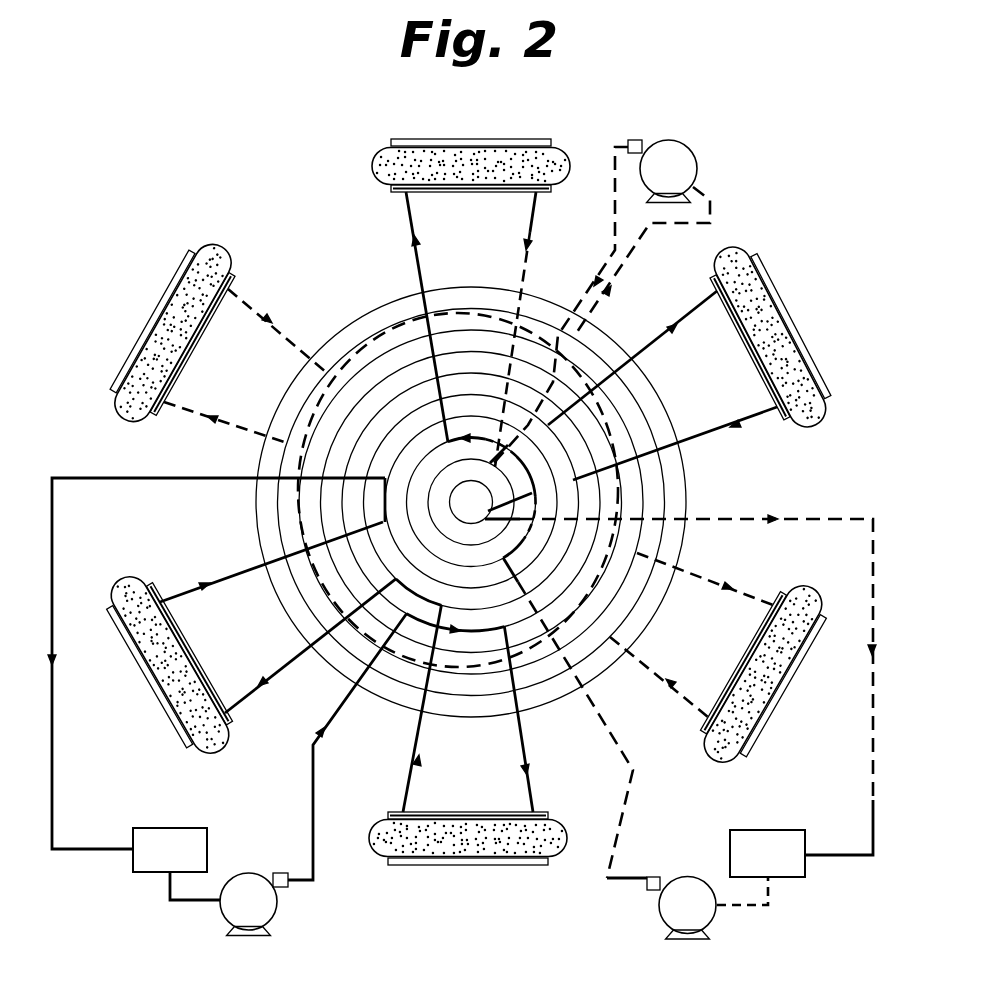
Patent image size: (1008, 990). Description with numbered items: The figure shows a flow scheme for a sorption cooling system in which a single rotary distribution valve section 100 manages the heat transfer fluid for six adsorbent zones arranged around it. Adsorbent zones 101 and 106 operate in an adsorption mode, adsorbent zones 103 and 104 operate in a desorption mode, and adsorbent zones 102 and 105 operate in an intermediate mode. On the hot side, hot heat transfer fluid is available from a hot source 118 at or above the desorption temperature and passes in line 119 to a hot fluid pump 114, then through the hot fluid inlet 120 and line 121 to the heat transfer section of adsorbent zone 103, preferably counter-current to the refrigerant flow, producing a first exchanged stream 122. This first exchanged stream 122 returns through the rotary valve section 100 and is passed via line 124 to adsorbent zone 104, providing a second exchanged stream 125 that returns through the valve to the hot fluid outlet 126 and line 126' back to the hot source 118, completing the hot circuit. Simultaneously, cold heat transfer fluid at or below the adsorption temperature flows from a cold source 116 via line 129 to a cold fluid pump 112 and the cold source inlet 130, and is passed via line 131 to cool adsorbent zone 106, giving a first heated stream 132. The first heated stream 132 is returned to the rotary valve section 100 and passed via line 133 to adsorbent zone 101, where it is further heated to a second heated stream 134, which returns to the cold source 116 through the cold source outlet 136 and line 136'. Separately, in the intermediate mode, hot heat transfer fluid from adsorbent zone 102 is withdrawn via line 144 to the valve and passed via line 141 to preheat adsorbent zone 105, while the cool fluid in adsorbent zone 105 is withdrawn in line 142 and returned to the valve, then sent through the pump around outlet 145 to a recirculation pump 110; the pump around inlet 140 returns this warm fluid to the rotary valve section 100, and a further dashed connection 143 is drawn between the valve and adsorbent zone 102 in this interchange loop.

The rotary distribution valve section 100 is at (366, 318).
The adsorbent zone 101 is at (797, 322).
The adsorbent zone 102 is at (783, 700).
The adsorbent zone 103 is at (467, 867).
The adsorbent zone 104 is at (160, 713).
The adsorbent zone 105 is at (150, 327).
The adsorbent zone 106 is at (457, 138).
The recirculation pump 110 is at (693, 147).
The cold fluid pump 112 is at (697, 940).
The hot fluid pump 114 is at (252, 935).
The cold source 116 is at (782, 830).
The hot source 118 is at (180, 826).
The hot heat transfer fluid line 119 is at (157, 897).
The hot fluid inlet 120 is at (342, 718).
The line 121 is at (538, 777).
The first exchanged stream 122 is at (416, 779).
The line 124 is at (243, 690).
The second exchanged stream 125 is at (236, 567).
The hot fluid outlet 126 is at (216, 551).
The line 126' is at (91, 776).
The cold heat transfer fluid line 129 is at (765, 913).
The cold source inlet 130 is at (650, 777).
The line 131 is at (415, 223).
The first heated stream 132 is at (525, 267).
The line 133 is at (650, 347).
The second heated stream 134 is at (752, 417).
The cold source outlet 136 is at (680, 642).
The line 136' is at (860, 845).
The pump around inlet 140 is at (610, 173).
The line 141 is at (227, 427).
The line 142 is at (258, 315).
The conduit 143 is at (713, 580).
The line 144 is at (655, 672).
The pump around outlet 145 is at (700, 230).